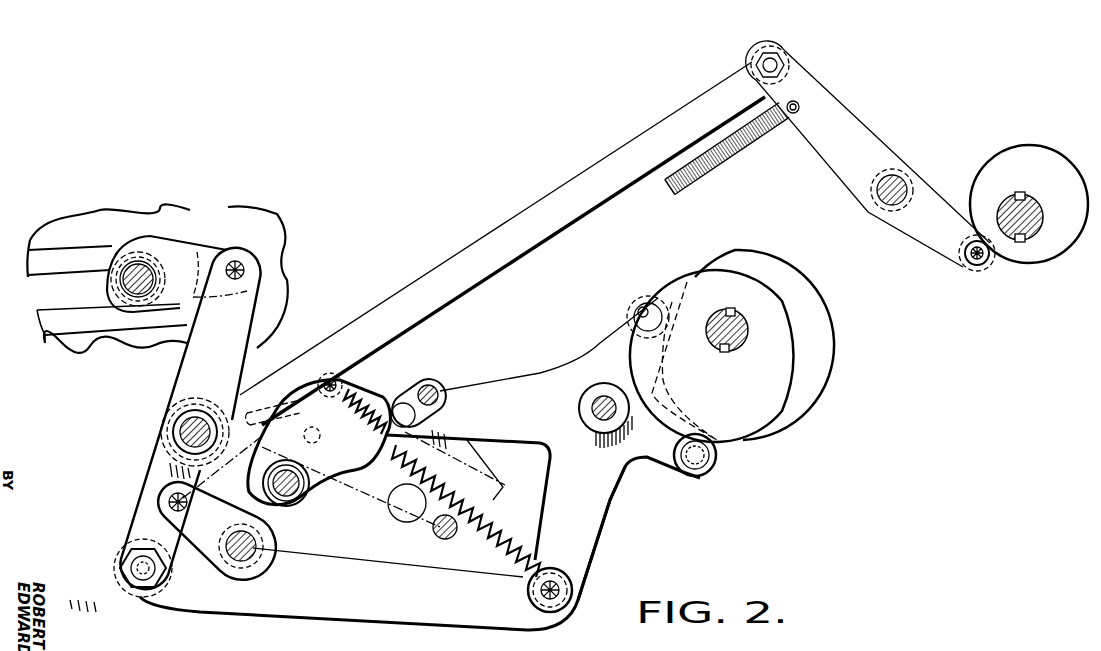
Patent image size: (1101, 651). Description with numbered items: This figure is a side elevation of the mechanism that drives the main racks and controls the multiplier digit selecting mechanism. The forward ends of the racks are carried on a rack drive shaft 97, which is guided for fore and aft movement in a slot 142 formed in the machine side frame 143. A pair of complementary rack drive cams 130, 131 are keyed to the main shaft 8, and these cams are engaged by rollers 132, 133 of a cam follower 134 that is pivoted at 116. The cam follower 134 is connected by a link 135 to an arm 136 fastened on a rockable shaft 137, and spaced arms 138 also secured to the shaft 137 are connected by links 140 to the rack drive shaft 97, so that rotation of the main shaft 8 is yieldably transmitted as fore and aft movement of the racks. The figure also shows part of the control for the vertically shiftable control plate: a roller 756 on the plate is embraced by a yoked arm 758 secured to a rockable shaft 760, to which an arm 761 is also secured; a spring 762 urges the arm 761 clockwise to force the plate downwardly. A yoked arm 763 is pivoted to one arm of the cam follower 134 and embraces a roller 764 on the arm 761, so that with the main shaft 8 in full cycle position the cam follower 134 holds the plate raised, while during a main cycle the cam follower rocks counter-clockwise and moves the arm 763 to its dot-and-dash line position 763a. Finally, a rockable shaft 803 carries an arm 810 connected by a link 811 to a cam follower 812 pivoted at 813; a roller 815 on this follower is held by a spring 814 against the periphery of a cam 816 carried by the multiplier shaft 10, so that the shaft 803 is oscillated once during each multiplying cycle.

The main shaft 8 is at (735, 351).
The multiplier shaft 10 is at (1041, 212).
The rack drive shaft 97 is at (124, 282).
The pivot of the cam follower 116 is at (598, 421).
The rack drive cam 130 is at (698, 277).
The rack drive cam 131 is at (812, 286).
The roller 132 is at (699, 467).
The roller 133 is at (647, 300).
The cam follower 134 is at (606, 530).
The link 135 is at (496, 614).
The arm 136 is at (136, 500).
The rockable shaft 137 is at (180, 434).
The spaced arms 138 is at (172, 410).
The link 140 is at (206, 250).
The slot 142 is at (70, 276).
The machine side frame 143 is at (272, 226).
The roller 756 is at (440, 386).
The yoked arm 758 is at (398, 388).
The rockable shaft 760 is at (266, 482).
The arm 761 is at (326, 381).
The spring 762 is at (487, 524).
The yoked arm 763 is at (383, 392).
The dot-and-dash line position of arm 763 763a is at (372, 492).
The roller 764 is at (305, 404).
The rockable shaft 803 is at (258, 548).
The arm 810 is at (178, 533).
The link 811 is at (480, 273).
The cam follower 812 is at (854, 117).
The pivot of cam follower 812 813 is at (902, 180).
The spring 814 is at (732, 146).
The roller 815 is at (972, 268).
The cam 816 is at (1047, 135).